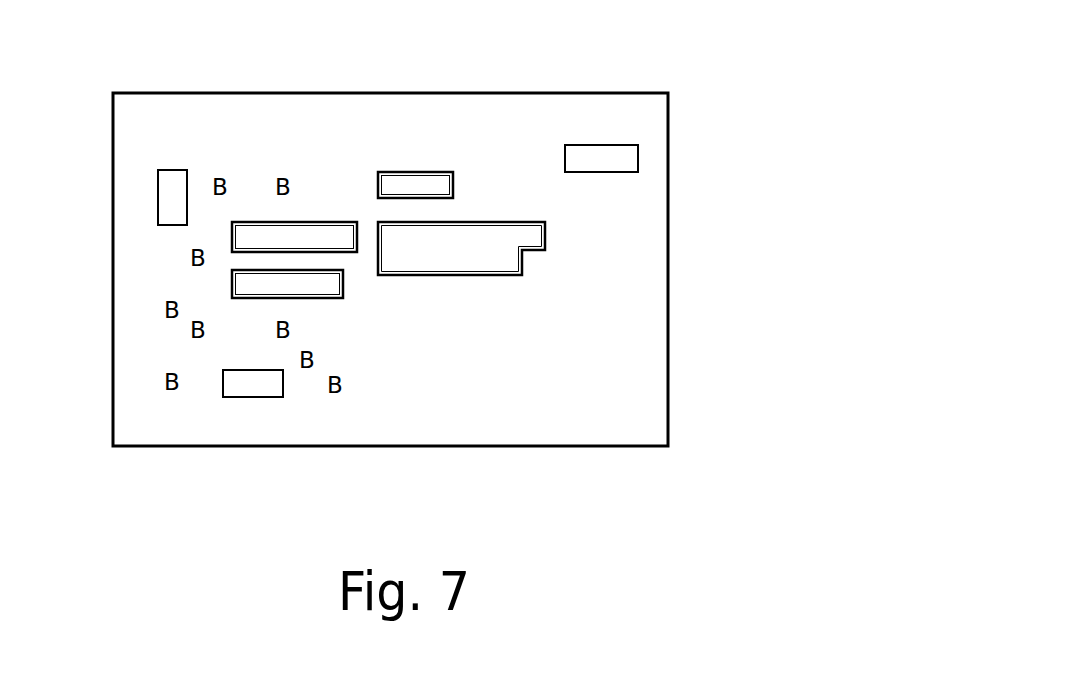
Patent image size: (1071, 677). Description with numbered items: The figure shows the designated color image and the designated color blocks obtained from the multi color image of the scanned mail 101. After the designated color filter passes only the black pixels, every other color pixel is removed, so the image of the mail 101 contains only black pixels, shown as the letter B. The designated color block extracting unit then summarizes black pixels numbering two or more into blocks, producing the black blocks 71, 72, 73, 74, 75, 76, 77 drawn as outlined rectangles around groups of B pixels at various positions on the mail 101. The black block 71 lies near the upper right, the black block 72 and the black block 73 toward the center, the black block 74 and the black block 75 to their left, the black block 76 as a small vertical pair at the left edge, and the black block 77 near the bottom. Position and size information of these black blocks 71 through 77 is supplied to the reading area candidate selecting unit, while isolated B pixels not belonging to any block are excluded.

The mail 101 is at (590, 92).
The black block 71 is at (602, 173).
The black block 72 is at (410, 172).
The black block 73 is at (410, 275).
The black block 74 is at (272, 222).
The black block 75 is at (308, 298).
The black block 76 is at (158, 183).
The black block 77 is at (237, 397).